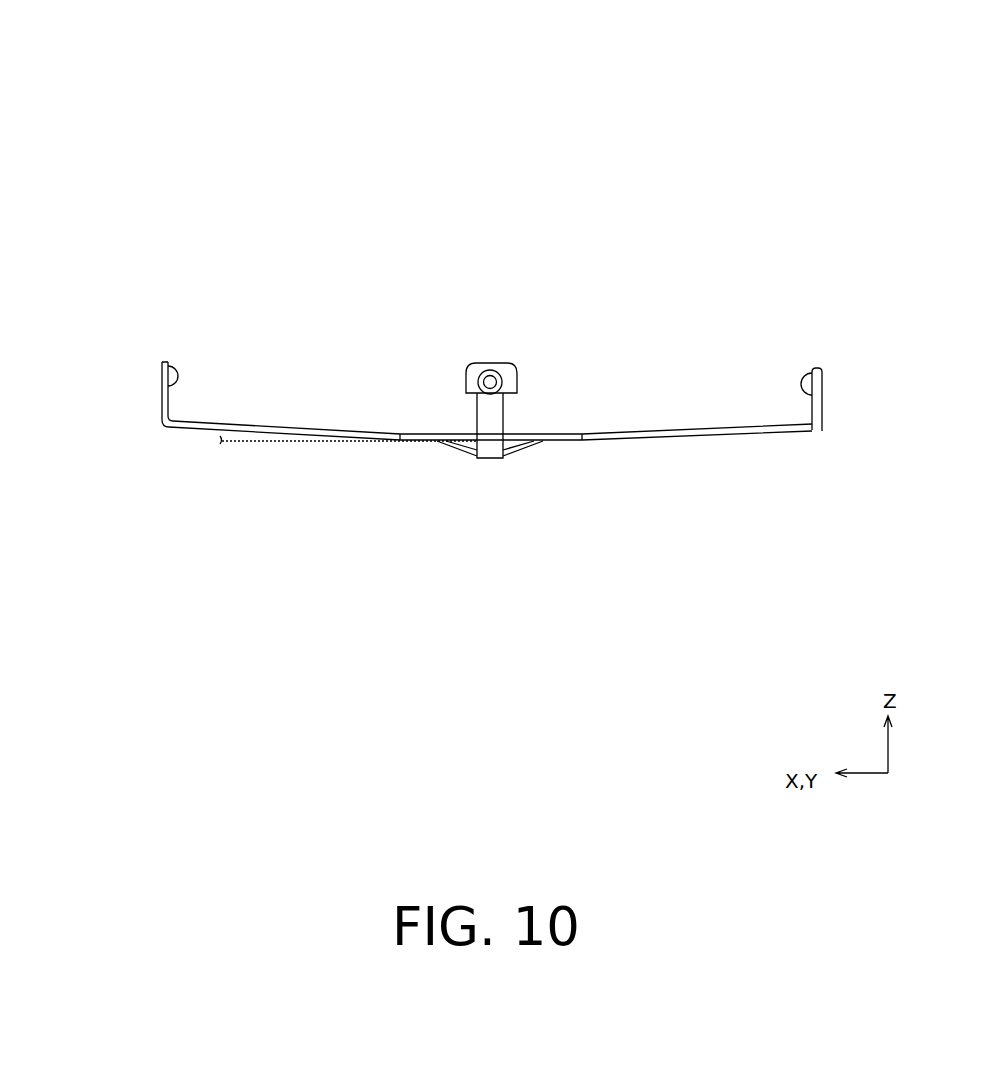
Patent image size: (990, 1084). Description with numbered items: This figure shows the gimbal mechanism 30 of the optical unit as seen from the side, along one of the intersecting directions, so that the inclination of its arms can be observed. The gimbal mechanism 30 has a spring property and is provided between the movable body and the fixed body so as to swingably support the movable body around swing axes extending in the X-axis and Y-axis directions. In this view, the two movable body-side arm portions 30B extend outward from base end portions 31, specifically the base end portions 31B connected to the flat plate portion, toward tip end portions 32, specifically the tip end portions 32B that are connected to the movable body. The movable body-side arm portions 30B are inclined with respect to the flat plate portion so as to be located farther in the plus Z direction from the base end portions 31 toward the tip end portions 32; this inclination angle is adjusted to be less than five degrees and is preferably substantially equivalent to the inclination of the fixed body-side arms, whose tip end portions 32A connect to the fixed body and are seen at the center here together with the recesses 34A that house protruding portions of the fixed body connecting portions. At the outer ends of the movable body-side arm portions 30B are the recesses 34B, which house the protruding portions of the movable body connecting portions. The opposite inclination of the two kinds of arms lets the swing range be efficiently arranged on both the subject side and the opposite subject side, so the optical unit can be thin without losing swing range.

The gimbal mechanism 30 is at (889, 105).
The movable body-side arm portions 30B is at (266, 424).
The base end portions 31 is at (490, 392).
The base end portions 31B is at (399, 434).
The tip end portions 32 is at (502, 379).
The tip end portions 32A is at (506, 411).
The tip end portions 32B is at (162, 395).
The recesses 34A is at (474, 370).
The recesses 34B is at (177, 374).